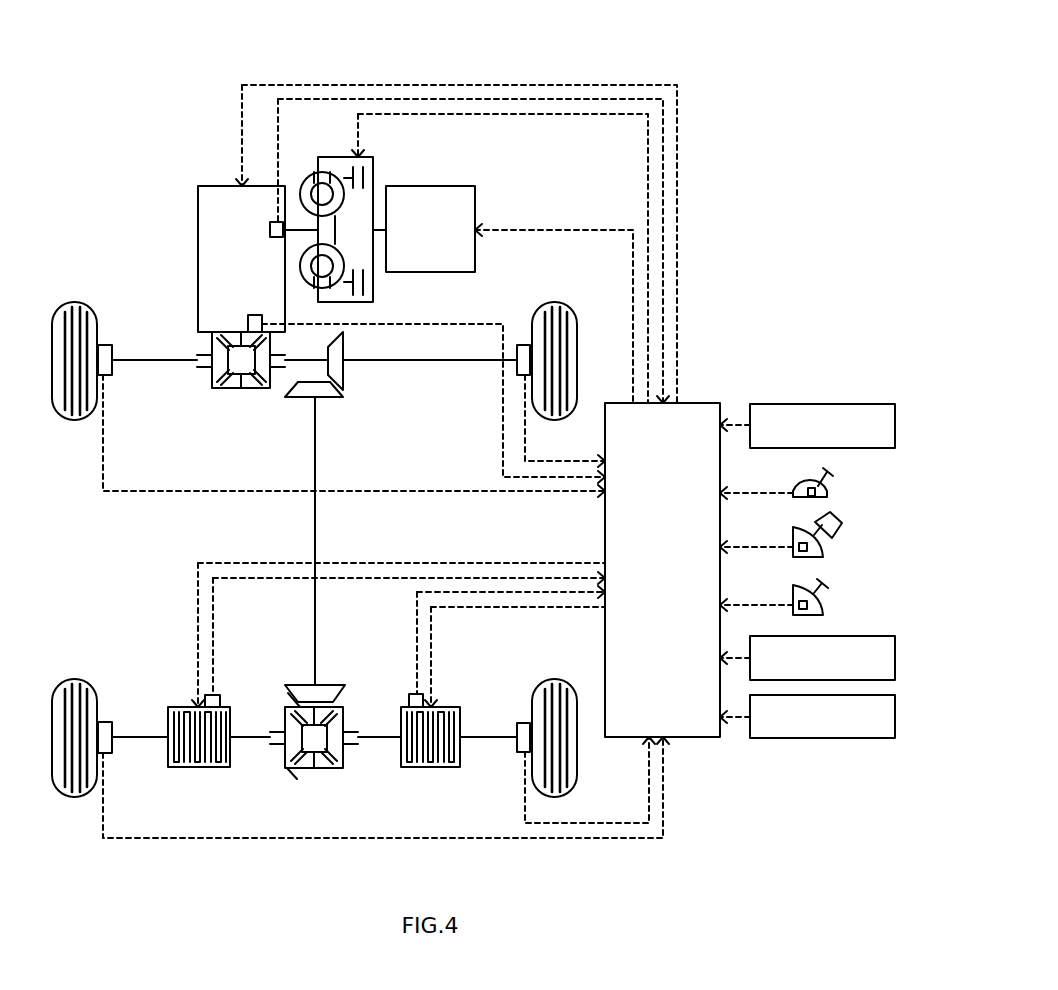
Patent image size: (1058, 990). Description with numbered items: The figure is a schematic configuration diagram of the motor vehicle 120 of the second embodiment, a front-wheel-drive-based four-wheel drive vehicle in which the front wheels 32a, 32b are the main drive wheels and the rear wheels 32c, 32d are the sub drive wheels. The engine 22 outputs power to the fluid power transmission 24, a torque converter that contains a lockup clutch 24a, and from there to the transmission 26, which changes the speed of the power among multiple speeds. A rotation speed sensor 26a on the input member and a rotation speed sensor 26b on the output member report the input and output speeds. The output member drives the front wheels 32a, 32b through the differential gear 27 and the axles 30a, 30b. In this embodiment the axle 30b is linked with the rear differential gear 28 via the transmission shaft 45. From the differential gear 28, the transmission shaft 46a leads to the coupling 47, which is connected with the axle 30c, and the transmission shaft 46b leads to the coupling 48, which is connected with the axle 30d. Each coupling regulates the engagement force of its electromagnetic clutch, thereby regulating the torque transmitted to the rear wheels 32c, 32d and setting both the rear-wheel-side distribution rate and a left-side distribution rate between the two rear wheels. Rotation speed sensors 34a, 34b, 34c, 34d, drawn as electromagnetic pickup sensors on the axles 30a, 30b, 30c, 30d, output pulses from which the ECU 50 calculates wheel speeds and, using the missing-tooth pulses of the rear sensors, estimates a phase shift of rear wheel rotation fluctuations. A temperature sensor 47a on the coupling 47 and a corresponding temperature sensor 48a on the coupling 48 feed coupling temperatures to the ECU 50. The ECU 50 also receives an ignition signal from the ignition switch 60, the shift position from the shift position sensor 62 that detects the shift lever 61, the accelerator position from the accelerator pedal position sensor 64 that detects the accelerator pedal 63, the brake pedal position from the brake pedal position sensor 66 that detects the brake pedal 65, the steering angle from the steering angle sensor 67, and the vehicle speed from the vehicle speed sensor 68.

The motor vehicle 120 is at (474, 56).
The engine 22 is at (430, 185).
The fluid power transmission 24 is at (309, 170).
The lockup clutch 24a is at (366, 290).
The transmission 26 is at (212, 185).
The rotation speed sensor 26a is at (270, 229).
The rotation speed sensor 26b is at (248, 323).
The differential gear 27 is at (236, 396).
The differential gear 28 is at (320, 776).
The axle 30a is at (155, 366).
The axle 30b is at (430, 366).
The axle 30c is at (142, 743).
The axle 30d is at (486, 743).
The front wheel 32a is at (75, 302).
The front wheel 32b is at (554, 302).
The rear wheel 32c is at (75, 679).
The rear wheel 32d is at (554, 679).
The rotation speed sensor 34a is at (105, 345).
The rotation speed sensor 34b is at (521, 345).
The rotation speed sensor 34c is at (105, 722).
The rotation speed sensor 34d is at (521, 723).
The transmission shaft 45 is at (315, 456).
The transmission shaft 46a is at (244, 743).
The transmission shaft 46b is at (374, 743).
The coupling 47 is at (183, 707).
The temperature sensor 47a is at (221, 696).
The coupling 48 is at (445, 707).
The right clutch sensor 48a is at (409, 696).
The electronic control unit 50 is at (700, 403).
The ignition switch 60 is at (895, 423).
The shift lever 61 is at (831, 472).
The shift position sensor 62 is at (827, 495).
The accelerator pedal 63 is at (841, 530).
The accelerator pedal position sensor 64 is at (823, 549).
The brake pedal 65 is at (830, 588).
The brake pedal position sensor 66 is at (823, 606).
The steering angle sensor 67 is at (895, 655).
The vehicle speed sensor 68 is at (895, 714).